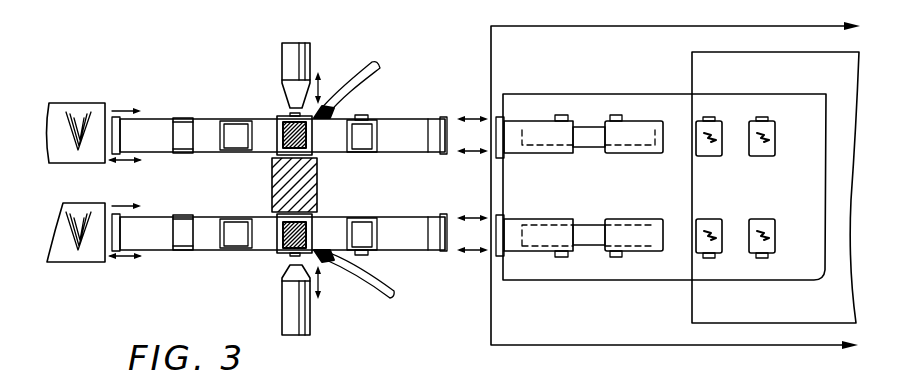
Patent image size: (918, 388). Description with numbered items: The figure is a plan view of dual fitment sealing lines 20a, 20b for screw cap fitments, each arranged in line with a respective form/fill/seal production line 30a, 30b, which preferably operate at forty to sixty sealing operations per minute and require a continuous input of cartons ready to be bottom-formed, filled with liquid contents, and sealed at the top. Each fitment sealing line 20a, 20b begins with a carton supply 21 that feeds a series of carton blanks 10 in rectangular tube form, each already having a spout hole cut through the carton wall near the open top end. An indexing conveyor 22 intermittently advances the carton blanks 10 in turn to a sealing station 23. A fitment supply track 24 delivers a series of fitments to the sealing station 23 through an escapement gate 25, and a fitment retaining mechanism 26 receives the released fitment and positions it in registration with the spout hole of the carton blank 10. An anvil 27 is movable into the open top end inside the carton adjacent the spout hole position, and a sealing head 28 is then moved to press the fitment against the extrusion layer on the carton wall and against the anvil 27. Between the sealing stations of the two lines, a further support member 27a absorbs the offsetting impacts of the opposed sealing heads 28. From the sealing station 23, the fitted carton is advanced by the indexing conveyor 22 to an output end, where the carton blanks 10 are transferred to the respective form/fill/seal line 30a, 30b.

The carton blanks 10 is at (298, 188).
The fitment sealing line 20a is at (218, 107).
The fitment sealing line 20b is at (218, 290).
The carton supply 21 is at (96, 164).
The indexing conveyor 22 is at (263, 150).
The sealing station 23 is at (282, 101).
The fitment supply track 24 is at (360, 300).
The escapement gate 25 is at (338, 114).
The fitment retaining mechanism 26 is at (279, 114).
The anvil 27 is at (305, 140).
The support member 27a is at (316, 184).
The sealing head 28 is at (282, 53).
The form/fill/seal production line 30a is at (546, 66).
The form/fill/seal production line 30b is at (546, 324).